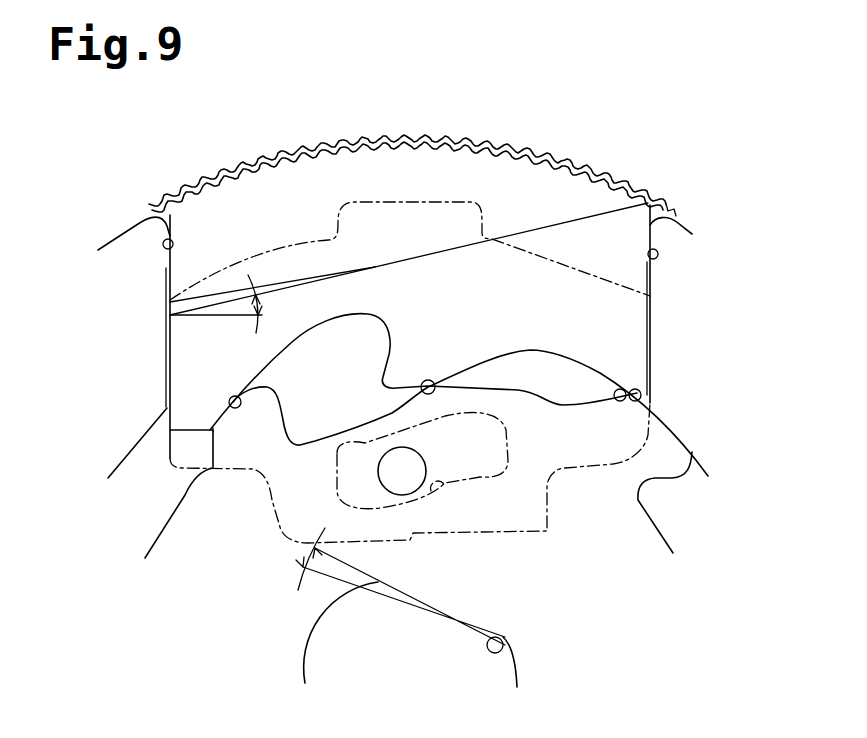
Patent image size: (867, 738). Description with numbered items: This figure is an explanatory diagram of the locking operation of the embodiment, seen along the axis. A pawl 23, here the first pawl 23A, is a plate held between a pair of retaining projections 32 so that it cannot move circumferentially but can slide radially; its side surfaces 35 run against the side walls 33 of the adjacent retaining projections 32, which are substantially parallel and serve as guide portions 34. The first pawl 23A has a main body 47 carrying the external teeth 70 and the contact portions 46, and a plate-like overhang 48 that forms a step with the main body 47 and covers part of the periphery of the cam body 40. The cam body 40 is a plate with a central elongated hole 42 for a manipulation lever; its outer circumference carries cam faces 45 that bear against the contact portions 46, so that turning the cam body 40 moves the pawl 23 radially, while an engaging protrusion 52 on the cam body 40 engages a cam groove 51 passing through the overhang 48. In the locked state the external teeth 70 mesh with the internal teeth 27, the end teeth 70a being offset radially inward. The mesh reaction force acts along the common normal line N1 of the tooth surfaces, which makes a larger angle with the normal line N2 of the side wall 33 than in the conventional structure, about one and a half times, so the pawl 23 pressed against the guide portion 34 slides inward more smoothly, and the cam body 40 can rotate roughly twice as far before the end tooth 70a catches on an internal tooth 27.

The internal teeth 27 is at (453, 141).
The main body 47 is at (540, 176).
The external teeth 70 is at (383, 182).
The end tooth 70a is at (638, 196).
The side walls 33 is at (407, 336).
The guide portions 34 is at (166, 353).
The side surfaces 35 is at (174, 244).
The common normal line N1 is at (405, 259).
The normal line of the side wall N2 is at (210, 319).
The pawl 23 is at (410, 409).
The first pawl 23A is at (482, 541).
The overhang 48 is at (587, 463).
The cam faces 45 is at (240, 408).
The contact portions 46 is at (213, 428).
The engaging protrusion 52 is at (423, 450).
The cam groove 51 is at (447, 497).
The retaining projections 32 is at (132, 447).
The cam body 40 is at (668, 538).
The elongated hole 42 is at (503, 640).